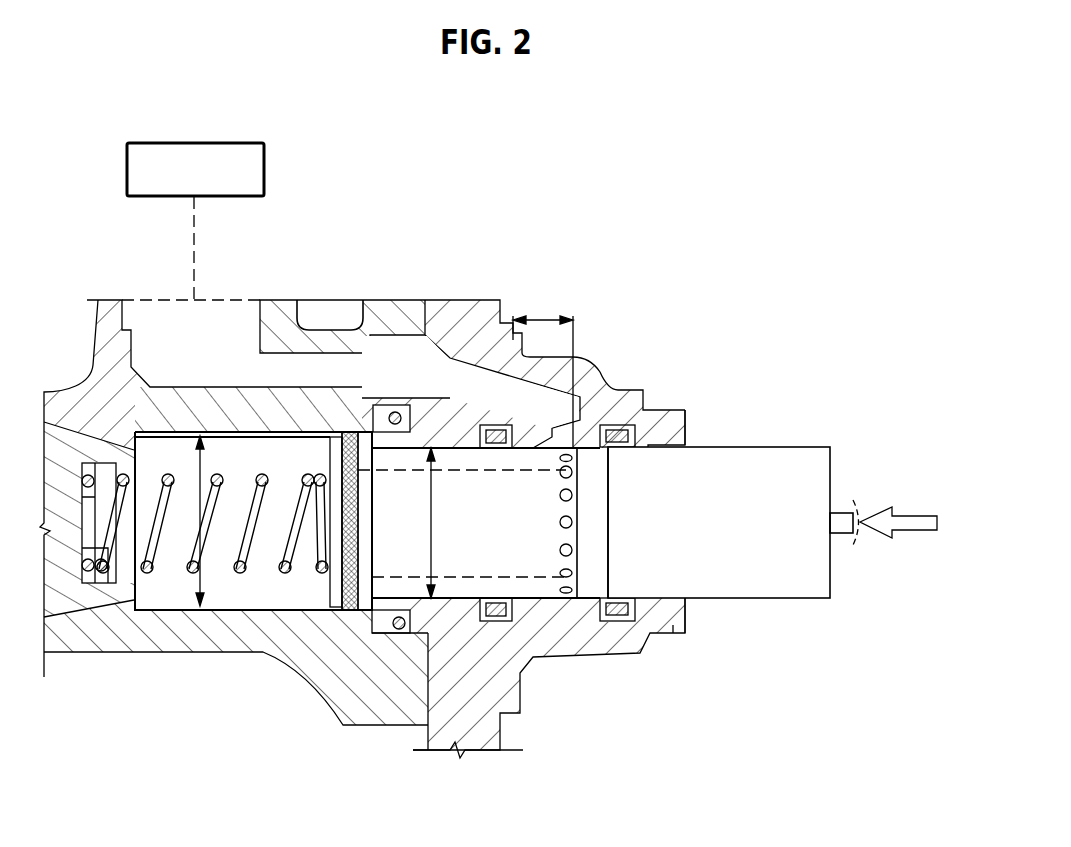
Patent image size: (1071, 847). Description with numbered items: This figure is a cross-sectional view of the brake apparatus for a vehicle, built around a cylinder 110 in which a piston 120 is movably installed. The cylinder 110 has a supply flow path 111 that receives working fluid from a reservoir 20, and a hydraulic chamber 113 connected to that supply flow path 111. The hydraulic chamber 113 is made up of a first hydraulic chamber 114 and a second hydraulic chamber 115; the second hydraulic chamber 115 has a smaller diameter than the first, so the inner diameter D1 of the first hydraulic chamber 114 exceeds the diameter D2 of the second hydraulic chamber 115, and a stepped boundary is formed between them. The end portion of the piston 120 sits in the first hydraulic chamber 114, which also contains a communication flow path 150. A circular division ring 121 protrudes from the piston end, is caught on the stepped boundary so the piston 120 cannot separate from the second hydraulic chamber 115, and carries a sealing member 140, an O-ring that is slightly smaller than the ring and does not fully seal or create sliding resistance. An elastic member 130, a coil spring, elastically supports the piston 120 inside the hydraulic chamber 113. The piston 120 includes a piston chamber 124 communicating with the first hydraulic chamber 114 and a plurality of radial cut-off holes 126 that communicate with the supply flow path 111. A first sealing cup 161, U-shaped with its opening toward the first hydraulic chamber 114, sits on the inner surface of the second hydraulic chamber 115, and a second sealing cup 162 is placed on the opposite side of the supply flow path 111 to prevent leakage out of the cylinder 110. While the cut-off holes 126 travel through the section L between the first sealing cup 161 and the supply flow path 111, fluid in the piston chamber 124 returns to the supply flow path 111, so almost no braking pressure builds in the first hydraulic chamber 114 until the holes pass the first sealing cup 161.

The reservoir 20 is at (230, 142).
The cylinder 110 is at (412, 302).
The supply flow path 111 is at (506, 378).
The hydraulic chamber 113 is at (308, 786).
The first hydraulic chamber 114 is at (250, 592).
The second hydraulic chamber 115 is at (337, 726).
The piston 120 is at (755, 447).
The division ring 121 is at (336, 432).
The piston chamber 124 is at (487, 565).
The cut-off hole 126 is at (588, 612).
The elastic member 130 is at (148, 576).
The sealing member 140 is at (352, 432).
The communication flow path 150 is at (318, 310).
The first sealing cup 161 is at (500, 622).
The second sealing cup 162 is at (650, 645).
The inner diameter of the first hydraulic chamber D1 is at (200, 455).
The diameter of the second hydraulic chamber D2 is at (431, 600).
The section L is at (546, 318).